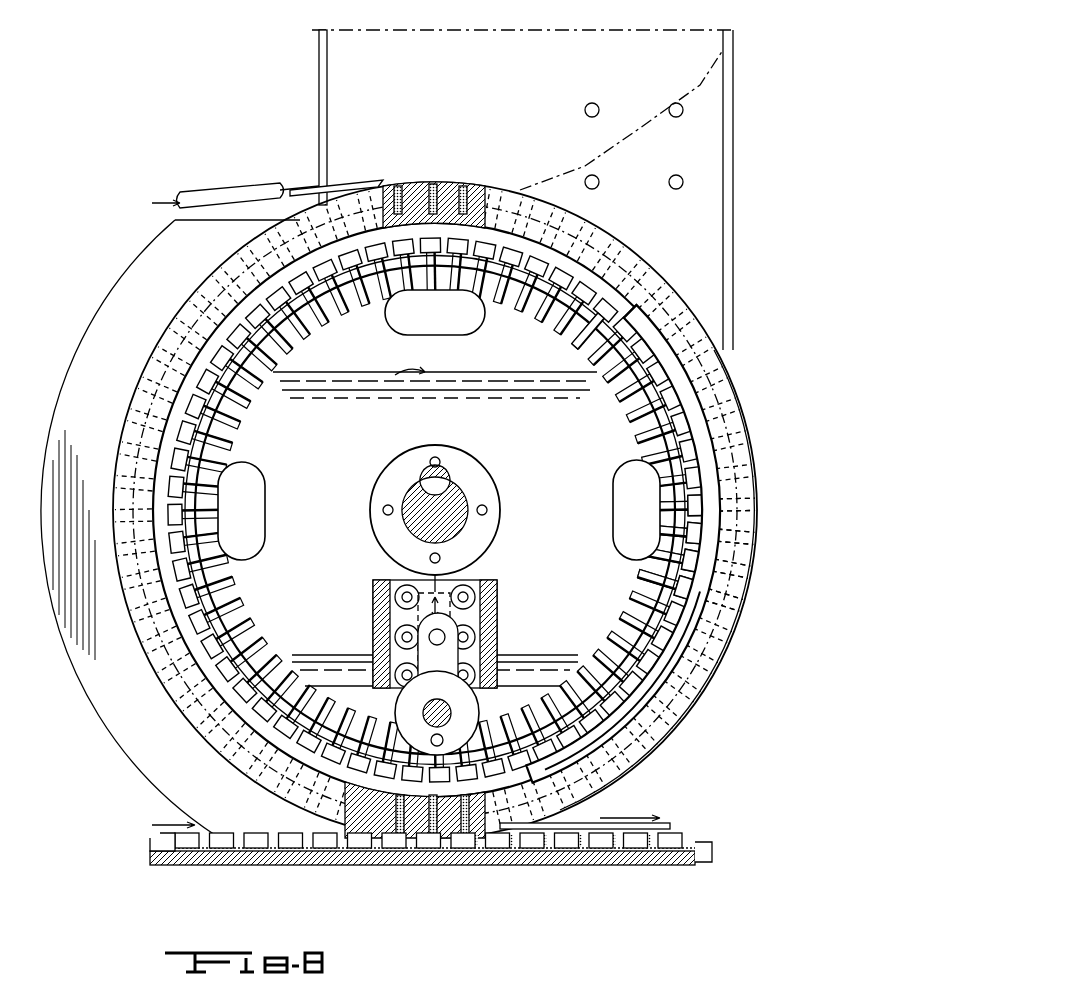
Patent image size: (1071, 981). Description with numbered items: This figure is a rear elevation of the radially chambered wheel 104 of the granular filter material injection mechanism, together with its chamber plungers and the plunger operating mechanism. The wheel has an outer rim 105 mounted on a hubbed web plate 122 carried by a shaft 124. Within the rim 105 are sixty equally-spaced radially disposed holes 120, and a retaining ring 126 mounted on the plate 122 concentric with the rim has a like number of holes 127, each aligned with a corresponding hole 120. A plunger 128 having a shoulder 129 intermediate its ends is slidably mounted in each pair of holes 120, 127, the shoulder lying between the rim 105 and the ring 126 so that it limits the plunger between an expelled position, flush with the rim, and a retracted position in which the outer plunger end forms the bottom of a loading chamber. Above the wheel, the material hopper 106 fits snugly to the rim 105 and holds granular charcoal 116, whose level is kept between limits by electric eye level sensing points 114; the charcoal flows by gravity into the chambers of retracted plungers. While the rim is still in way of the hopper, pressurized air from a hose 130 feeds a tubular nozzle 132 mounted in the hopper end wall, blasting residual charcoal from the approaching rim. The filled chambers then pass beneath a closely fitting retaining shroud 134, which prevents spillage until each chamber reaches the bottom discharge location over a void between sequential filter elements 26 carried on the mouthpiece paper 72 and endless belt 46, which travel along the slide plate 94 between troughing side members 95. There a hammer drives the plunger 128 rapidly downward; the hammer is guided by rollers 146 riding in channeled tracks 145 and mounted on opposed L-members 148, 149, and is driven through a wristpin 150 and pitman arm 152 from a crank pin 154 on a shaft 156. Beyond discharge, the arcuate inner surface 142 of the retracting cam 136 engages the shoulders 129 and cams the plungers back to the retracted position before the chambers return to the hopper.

The filter elements 26 is at (343, 850).
The endless belt 46 is at (168, 845).
The mouthpiece paper 72 is at (668, 827).
The slide plate 94 is at (216, 864).
The troughing side member 95 is at (694, 845).
The wheel 104 is at (711, 707).
The rim 105 is at (728, 395).
The material hopper 106 is at (394, 25).
The level sensing points 114 is at (592, 175).
The granular charcoal 116 is at (630, 135).
The holes 120 is at (740, 420).
The hubbed web plate 122 is at (560, 449).
The shaft 124 is at (432, 492).
The retaining ring 126 is at (228, 436).
The holes 127 is at (222, 410).
The plunger 128 is at (586, 340).
The shoulder 129 is at (640, 330).
The hose 130 is at (258, 188).
The tubular nozzle 132 is at (346, 181).
The retaining shroud 134 is at (152, 335).
The retracting cam 136 is at (710, 495).
The arcuate inner surface 142 is at (690, 622).
The channeled track 145 is at (497, 613).
The roller 146 is at (476, 637).
The L-member 148 is at (495, 668).
The L-member 149 is at (378, 603).
The wristpin 150 is at (430, 638).
The pitman arm 152 is at (425, 655).
The crank pin 154 is at (444, 741).
The shaft 156 is at (448, 716).